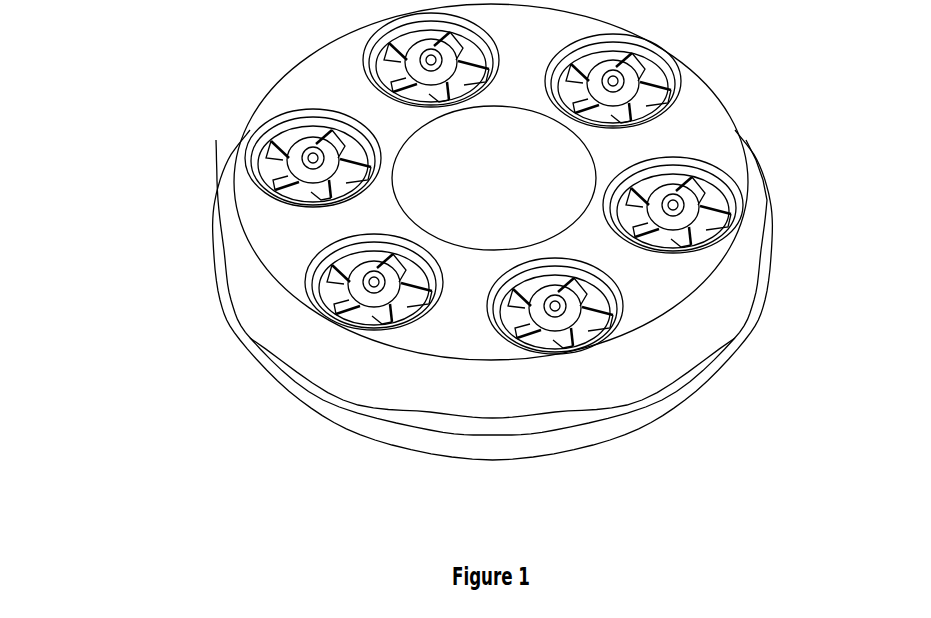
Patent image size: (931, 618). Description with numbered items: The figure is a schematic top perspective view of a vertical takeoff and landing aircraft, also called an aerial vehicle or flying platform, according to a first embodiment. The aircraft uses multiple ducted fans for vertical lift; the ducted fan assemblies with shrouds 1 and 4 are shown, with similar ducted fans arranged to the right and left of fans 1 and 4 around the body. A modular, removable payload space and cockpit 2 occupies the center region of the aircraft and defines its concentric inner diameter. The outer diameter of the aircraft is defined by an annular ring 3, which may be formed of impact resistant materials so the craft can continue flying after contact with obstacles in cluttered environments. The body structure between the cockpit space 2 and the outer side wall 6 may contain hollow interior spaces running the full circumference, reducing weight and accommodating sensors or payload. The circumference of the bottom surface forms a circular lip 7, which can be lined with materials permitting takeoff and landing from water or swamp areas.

The ducted fan assembly with shroud 1 is at (293, 153).
The modular removable payload space and cockpit 2 is at (563, 159).
The annular ring 3 is at (224, 313).
The ducted fan assembly with shroud 4 is at (622, 295).
The top surface 6 is at (651, 352).
The circular lip 7 is at (498, 465).